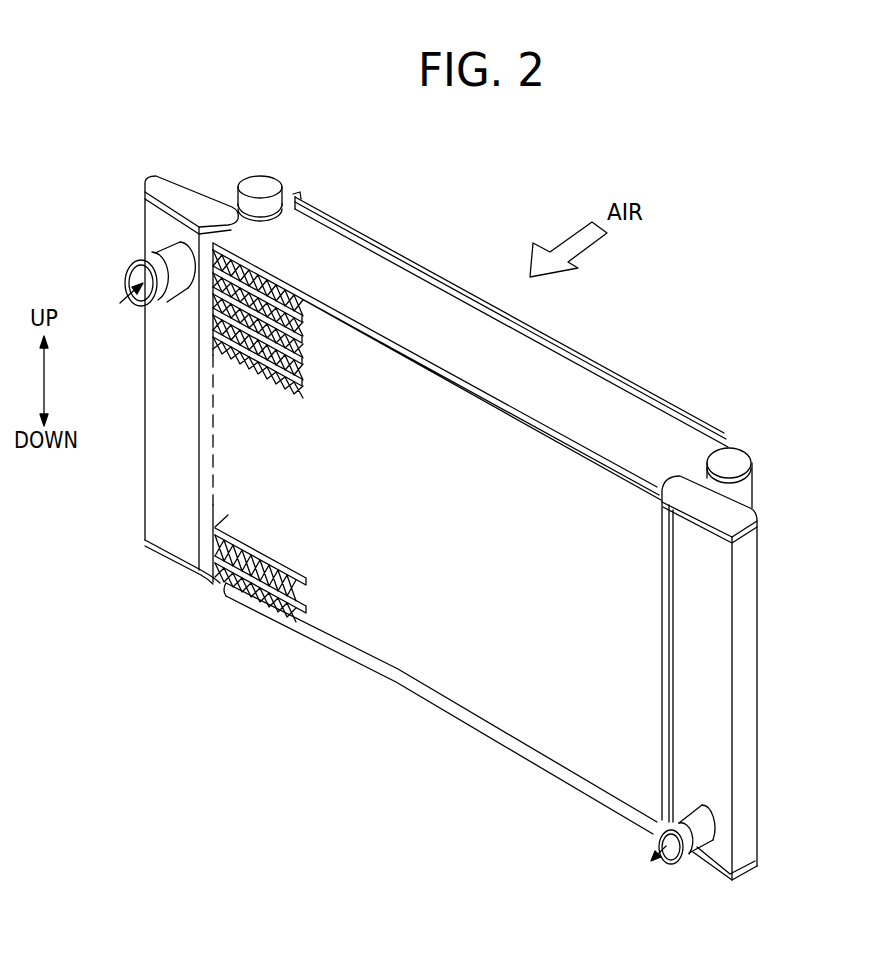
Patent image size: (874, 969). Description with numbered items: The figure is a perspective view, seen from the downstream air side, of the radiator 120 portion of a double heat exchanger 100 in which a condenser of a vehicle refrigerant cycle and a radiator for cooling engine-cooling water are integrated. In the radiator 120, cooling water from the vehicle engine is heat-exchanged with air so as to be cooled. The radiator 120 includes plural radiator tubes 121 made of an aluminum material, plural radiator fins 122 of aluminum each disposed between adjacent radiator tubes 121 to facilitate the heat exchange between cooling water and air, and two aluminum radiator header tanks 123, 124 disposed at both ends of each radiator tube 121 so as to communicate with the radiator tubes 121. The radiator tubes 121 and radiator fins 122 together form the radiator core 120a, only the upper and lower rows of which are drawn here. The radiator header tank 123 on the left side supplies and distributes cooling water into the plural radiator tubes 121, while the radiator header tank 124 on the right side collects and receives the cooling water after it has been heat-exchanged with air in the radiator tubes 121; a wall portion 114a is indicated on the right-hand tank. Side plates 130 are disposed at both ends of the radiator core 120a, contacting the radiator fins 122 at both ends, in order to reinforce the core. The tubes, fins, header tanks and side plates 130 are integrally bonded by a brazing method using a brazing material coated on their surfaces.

The double heat exchanger 100 is at (468, 514).
The header tank side wall 114a is at (743, 618).
The radiator 120 is at (437, 493).
The radiator core 120a is at (445, 625).
The radiator tubes 121 is at (305, 322).
The radiator fins 122 is at (265, 280).
The radiator header tank 123 is at (156, 230).
The radiator header tank 124 is at (752, 664).
The side plates 130 is at (566, 385).